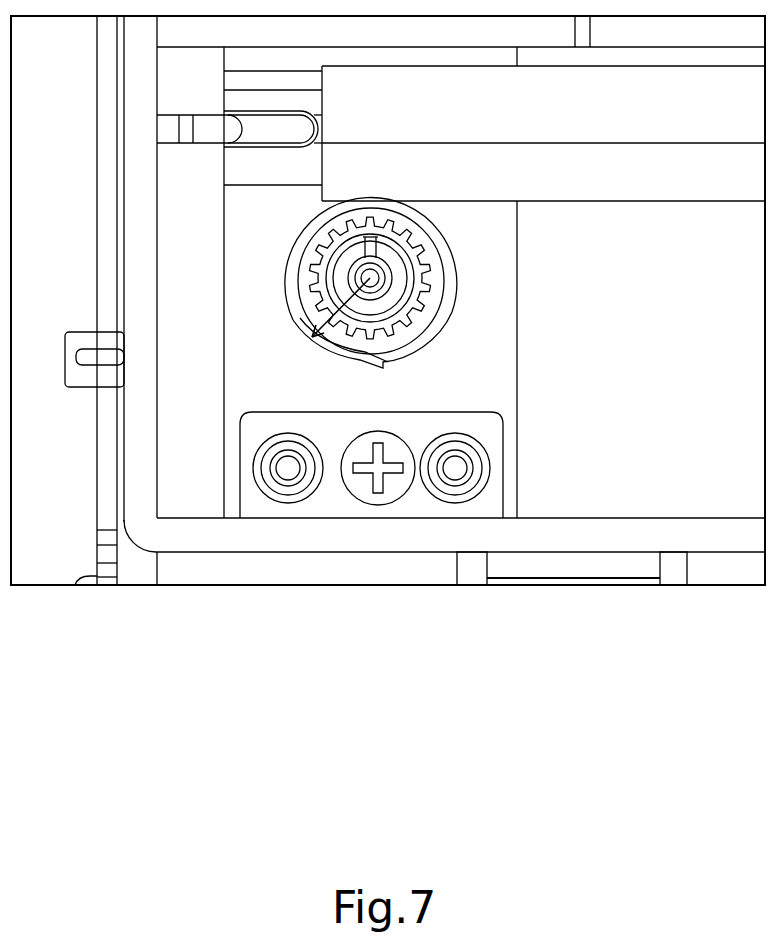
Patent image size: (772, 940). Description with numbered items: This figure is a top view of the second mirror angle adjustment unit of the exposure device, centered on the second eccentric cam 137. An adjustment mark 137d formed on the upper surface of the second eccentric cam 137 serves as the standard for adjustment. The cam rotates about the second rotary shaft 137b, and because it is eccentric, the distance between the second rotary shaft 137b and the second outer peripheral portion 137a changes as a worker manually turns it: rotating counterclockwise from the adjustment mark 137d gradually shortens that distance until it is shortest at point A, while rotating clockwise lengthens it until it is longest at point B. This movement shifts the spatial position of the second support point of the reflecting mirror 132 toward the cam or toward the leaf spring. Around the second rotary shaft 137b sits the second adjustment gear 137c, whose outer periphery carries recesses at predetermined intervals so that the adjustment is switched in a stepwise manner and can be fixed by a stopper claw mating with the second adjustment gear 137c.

The reflecting mirror 132 is at (618, 181).
The second eccentric cam 137 is at (383, 285).
The second outer peripheral portion 137a is at (460, 262).
The second rotary shaft 137b is at (364, 266).
The second adjustment gear 137c is at (410, 322).
The adjustment mark 137d is at (382, 252).